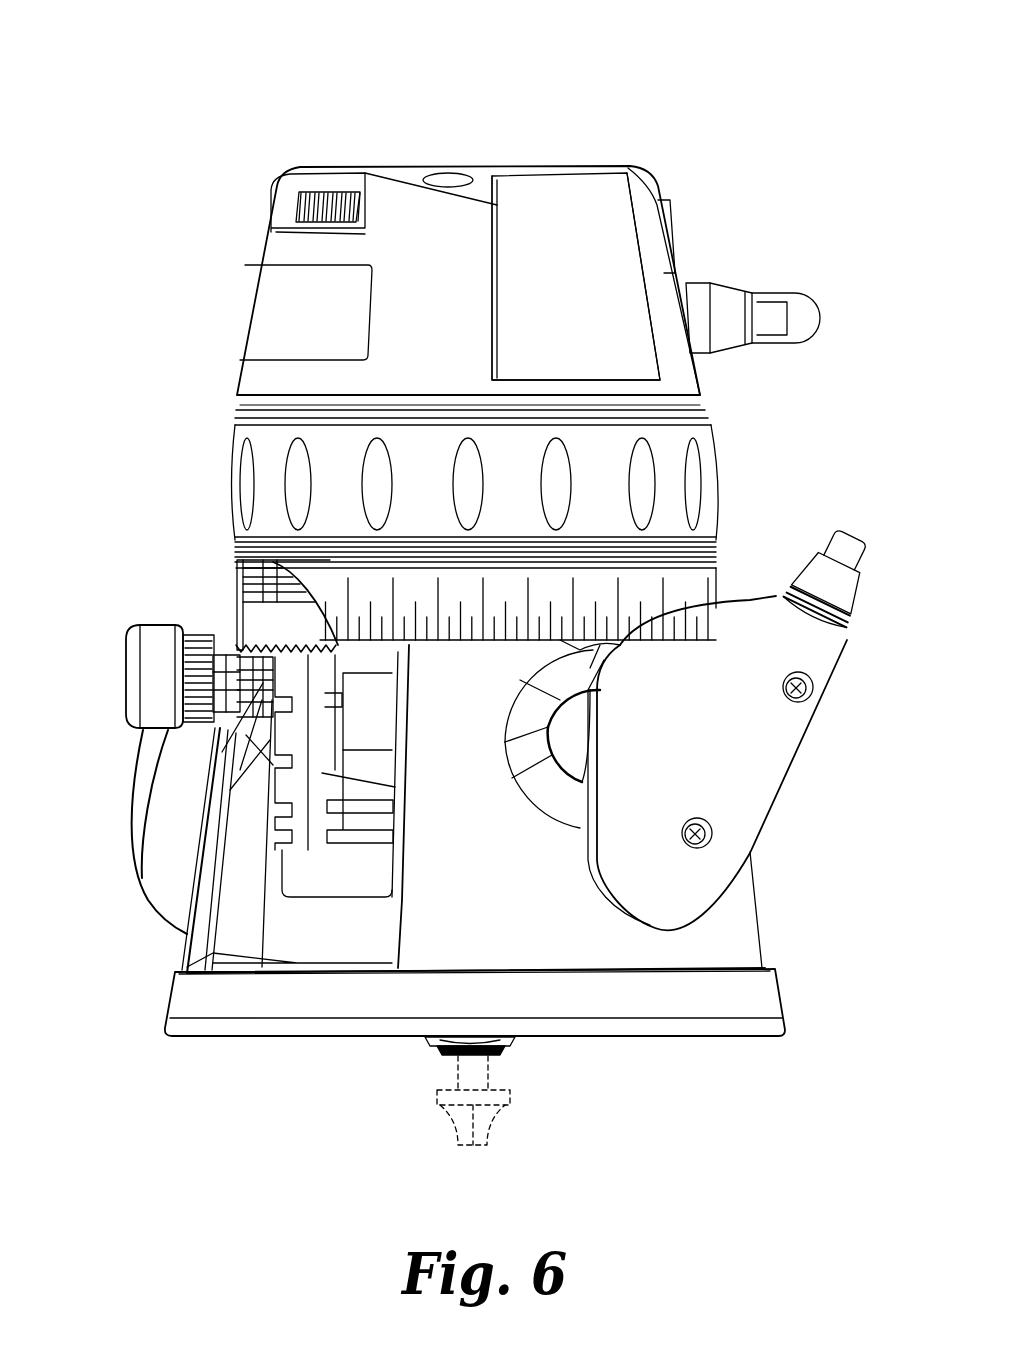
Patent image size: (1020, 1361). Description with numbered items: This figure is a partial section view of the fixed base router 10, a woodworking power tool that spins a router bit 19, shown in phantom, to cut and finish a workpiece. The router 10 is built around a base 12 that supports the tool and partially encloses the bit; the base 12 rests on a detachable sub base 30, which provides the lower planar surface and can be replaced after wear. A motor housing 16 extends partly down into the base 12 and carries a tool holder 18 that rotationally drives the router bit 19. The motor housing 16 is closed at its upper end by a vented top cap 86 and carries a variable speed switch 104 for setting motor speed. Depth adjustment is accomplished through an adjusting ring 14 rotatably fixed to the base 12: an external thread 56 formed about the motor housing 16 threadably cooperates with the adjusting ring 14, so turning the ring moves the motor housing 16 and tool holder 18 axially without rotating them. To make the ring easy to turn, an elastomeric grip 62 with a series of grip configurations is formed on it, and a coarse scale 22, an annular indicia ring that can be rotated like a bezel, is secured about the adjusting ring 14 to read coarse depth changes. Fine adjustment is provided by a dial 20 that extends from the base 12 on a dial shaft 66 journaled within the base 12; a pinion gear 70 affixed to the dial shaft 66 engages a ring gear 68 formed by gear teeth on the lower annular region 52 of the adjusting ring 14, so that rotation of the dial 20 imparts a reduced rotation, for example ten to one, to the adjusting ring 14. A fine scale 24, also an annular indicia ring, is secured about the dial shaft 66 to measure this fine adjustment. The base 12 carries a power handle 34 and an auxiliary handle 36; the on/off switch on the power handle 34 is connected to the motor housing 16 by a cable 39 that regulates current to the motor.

The fixed base router 10 is at (466, 92).
The base 12 is at (522, 905).
The adjusting ring 14 is at (724, 436).
The motor housing 16 is at (649, 173).
The tool holder 18 is at (430, 1052).
The router bit 19 is at (500, 1125).
The dial 20 is at (128, 640).
The coarse scale 22 is at (732, 576).
The fine scale 24 is at (190, 634).
The sub base 30 is at (740, 1036).
The power handle 34 is at (768, 738).
The auxiliary handle 36 is at (150, 745).
The cable 39 is at (720, 285).
The lower annular region 52 is at (240, 578).
The external thread 56 is at (358, 810).
The elastomeric grip 62 is at (700, 487).
The dial shaft 66 is at (226, 640).
The ring gear 68 is at (275, 740).
The pinion gear 70 is at (250, 710).
The top cap 86 is at (535, 190).
The variable speed switch 104 is at (325, 205).